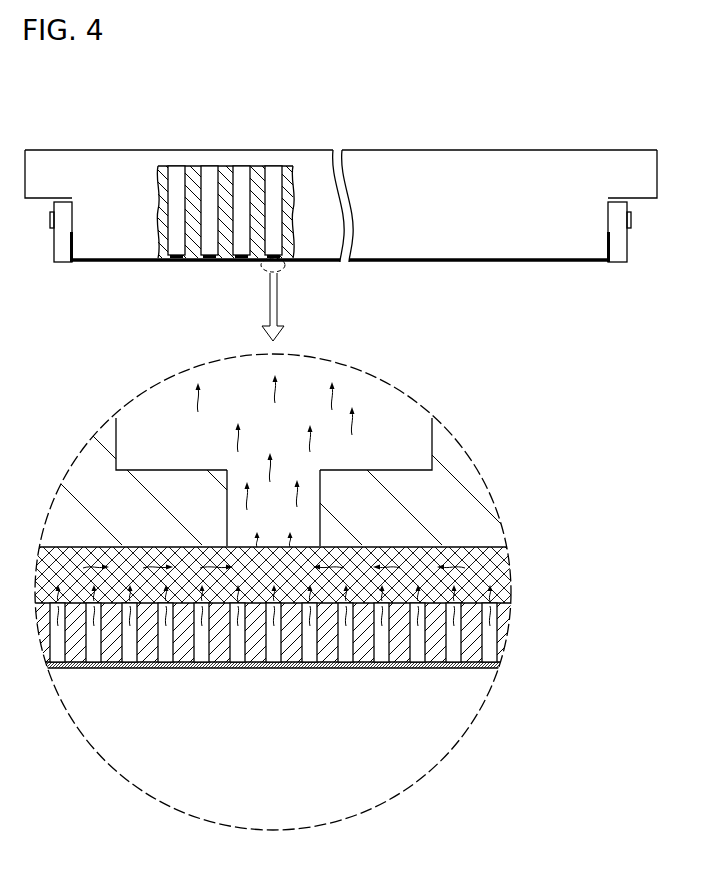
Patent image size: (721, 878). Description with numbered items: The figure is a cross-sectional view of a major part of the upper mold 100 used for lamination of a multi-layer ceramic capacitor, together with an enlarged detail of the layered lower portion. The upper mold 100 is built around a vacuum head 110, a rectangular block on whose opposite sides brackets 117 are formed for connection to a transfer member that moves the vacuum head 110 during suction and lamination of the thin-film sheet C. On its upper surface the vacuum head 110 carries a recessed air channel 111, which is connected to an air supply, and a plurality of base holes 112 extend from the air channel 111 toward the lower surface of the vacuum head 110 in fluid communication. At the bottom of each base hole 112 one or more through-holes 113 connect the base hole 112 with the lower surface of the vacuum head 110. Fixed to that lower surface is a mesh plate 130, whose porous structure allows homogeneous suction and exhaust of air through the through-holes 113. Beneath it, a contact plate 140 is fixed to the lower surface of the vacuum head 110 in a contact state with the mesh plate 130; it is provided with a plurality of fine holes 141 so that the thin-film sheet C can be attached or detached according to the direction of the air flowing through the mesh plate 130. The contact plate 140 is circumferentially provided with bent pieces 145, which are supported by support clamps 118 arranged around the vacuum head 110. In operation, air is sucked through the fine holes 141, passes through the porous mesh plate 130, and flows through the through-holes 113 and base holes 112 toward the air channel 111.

The upper mold 100 is at (478, 71).
The vacuum head 110 is at (530, 137).
The air channel 111 is at (188, 160).
The base hole 112 is at (275, 177).
The through-hole 113 is at (307, 517).
The bracket 117 is at (636, 160).
The support clamp 118 is at (63, 210).
The bent piece 145 is at (71, 251).
The mesh plate 130 is at (133, 268).
The contact plate 140 is at (509, 620).
The fine hole 141 is at (310, 652).
The thin-film sheet C is at (397, 669).